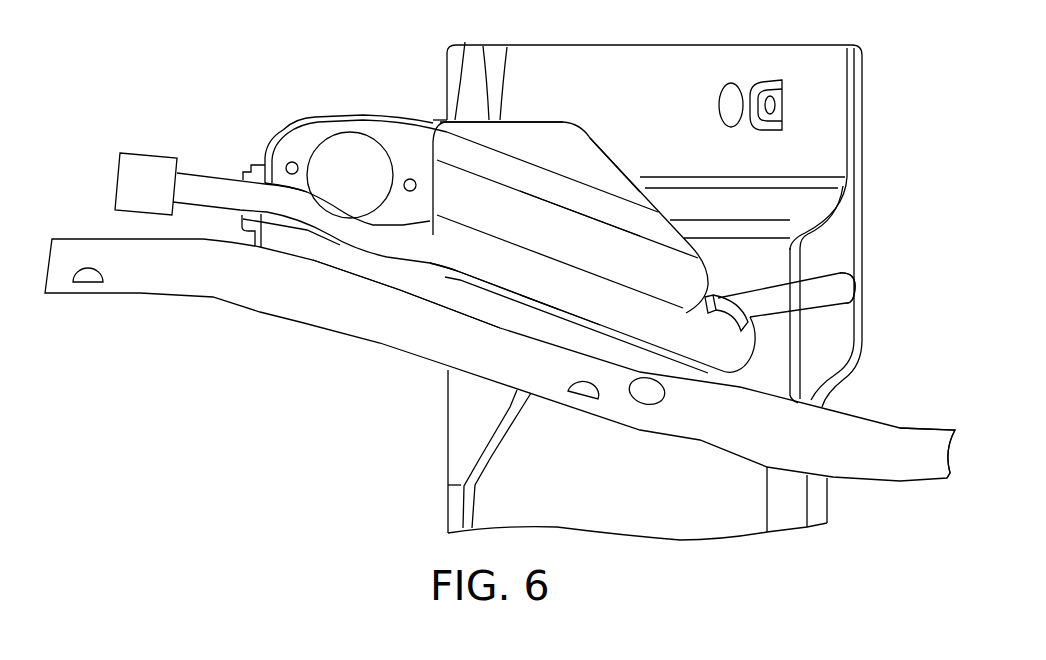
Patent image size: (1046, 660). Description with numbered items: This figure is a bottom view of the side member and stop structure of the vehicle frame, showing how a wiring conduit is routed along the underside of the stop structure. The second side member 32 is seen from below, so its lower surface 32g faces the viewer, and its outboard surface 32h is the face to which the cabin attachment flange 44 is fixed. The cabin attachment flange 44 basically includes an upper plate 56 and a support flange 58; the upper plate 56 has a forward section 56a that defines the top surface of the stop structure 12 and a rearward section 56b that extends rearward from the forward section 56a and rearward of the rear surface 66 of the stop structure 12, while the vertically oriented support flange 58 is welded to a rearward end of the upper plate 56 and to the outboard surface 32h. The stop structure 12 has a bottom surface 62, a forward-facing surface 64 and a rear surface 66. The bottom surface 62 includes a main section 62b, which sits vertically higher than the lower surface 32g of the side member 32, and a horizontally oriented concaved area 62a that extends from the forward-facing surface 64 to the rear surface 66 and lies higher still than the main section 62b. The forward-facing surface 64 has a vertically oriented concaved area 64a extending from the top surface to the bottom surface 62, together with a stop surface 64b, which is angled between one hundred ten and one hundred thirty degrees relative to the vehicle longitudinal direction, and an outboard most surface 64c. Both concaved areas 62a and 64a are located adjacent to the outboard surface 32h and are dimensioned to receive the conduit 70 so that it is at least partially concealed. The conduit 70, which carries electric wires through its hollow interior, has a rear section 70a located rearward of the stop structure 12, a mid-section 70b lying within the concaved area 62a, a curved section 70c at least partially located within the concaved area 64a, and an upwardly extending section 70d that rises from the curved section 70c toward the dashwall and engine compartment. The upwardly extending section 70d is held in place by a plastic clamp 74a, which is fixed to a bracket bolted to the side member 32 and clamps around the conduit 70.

The stop structure 12 is at (431, 144).
The second side member 32 is at (503, 360).
The lower surface of the side member 32g is at (407, 320).
The outboard surface of the side member 32h is at (933, 428).
The cabin attachment flange 44 is at (331, 176).
The upper plate 56 is at (331, 176).
The forward section of the upper plate 56a is at (465, 46).
The rearward section of the upper plate 56b is at (297, 146).
The support flange 58 is at (240, 220).
The bottom surface 62 is at (585, 212).
The concaved area of the bottom surface 62a is at (483, 238).
The main section of the bottom surface 62b is at (570, 233).
The forward-facing surface 64 is at (617, 195).
The concaved area of the forward-facing surface 64a is at (720, 288).
The stop surface 64b is at (607, 158).
The outboard most surface 64c is at (558, 120).
The rear surface 66 is at (407, 218).
The conduit 70 is at (517, 267).
The rear section of the conduit 70a is at (325, 218).
The mid-section of the conduit 70b is at (545, 287).
The curved section of the conduit 70c is at (733, 353).
The upwardly extending section of the conduit 70d is at (145, 172).
The plastic clamp 74a is at (791, 318).